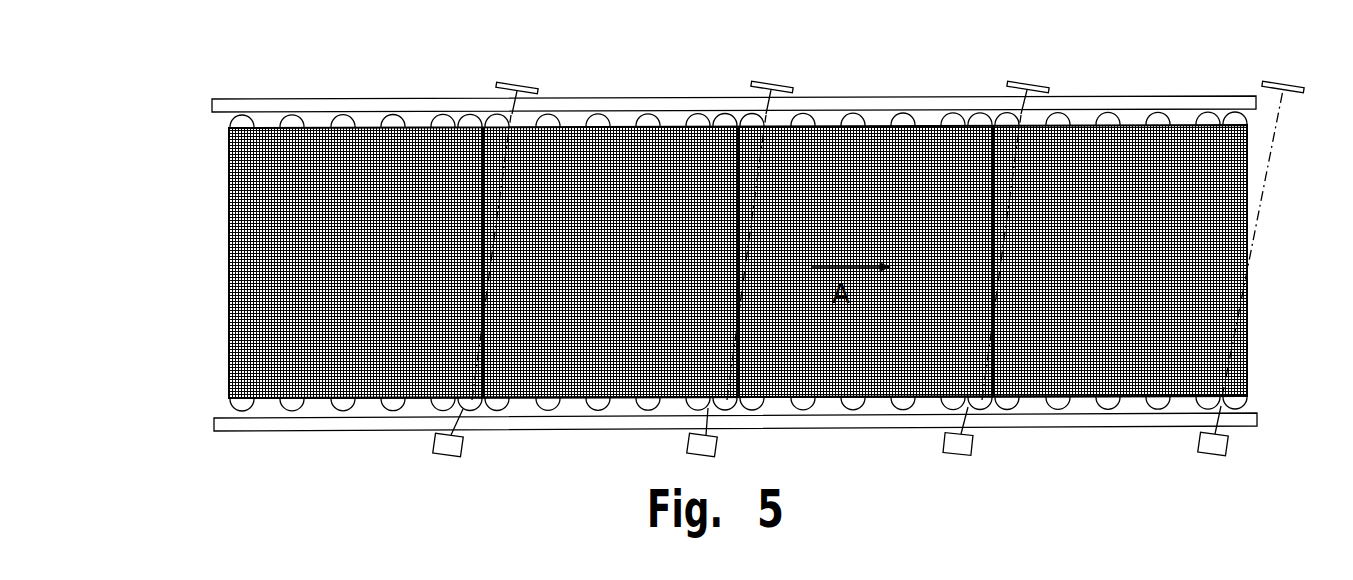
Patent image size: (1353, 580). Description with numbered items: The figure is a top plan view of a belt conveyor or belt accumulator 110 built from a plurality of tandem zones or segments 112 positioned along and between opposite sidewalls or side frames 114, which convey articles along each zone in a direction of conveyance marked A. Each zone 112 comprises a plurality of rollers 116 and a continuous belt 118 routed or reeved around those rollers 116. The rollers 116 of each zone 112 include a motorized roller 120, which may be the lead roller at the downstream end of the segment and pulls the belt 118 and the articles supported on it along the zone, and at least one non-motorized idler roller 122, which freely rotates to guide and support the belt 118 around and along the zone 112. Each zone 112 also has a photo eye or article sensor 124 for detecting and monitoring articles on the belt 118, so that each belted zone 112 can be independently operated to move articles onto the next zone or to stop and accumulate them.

The belt conveyor 110 is at (704, 62).
The zone 112 is at (893, 94).
The sidewall 114 is at (410, 101).
The roller 116 is at (224, 405).
The continuous belt 118 is at (1207, 208).
The motorized roller 120 is at (973, 110).
The idler roller 122 is at (1158, 110).
The article sensor 124 is at (442, 456).